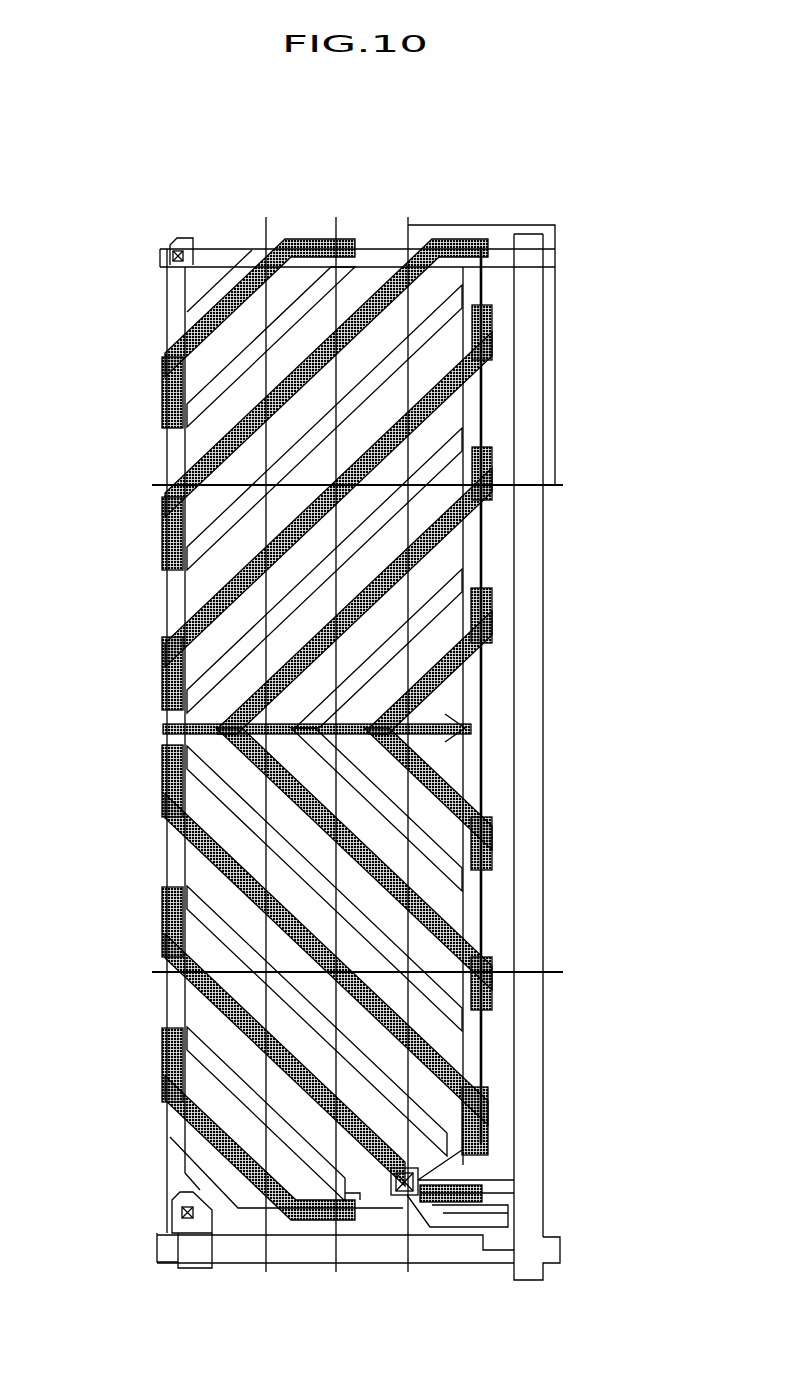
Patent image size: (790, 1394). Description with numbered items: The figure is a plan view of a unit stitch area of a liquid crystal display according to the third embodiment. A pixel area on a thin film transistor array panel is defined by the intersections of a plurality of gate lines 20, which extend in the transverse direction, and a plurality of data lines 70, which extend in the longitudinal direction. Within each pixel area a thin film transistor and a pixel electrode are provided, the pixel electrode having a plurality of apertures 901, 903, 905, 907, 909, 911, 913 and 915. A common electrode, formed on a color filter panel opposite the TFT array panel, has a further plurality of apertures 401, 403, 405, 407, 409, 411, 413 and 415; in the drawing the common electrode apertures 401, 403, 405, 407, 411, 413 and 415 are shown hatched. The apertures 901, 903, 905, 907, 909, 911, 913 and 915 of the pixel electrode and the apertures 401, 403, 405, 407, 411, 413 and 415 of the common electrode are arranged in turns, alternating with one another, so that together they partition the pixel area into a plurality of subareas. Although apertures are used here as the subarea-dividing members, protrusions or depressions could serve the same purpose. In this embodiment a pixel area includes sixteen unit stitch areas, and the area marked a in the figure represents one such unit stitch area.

The aperture 401 is at (162, 378).
The aperture 403 is at (162, 534).
The aperture 405 is at (162, 666).
The aperture 407 is at (163, 729).
The aperture 409 is at (497, 835).
The aperture 411 is at (162, 782).
The aperture 413 is at (162, 907).
The aperture 415 is at (162, 1049).
The aperture 901 is at (337, 263).
The aperture 903 is at (477, 303).
The aperture 905 is at (477, 440).
The aperture 907 is at (480, 580).
The aperture 909 is at (470, 728).
The aperture 911 is at (480, 1028).
The aperture 913 is at (462, 1172).
The aperture 915 is at (367, 1202).
The data line 70 is at (525, 940).
The gate line 20 is at (340, 1257).
The unit stitch area a is at (553, 343).